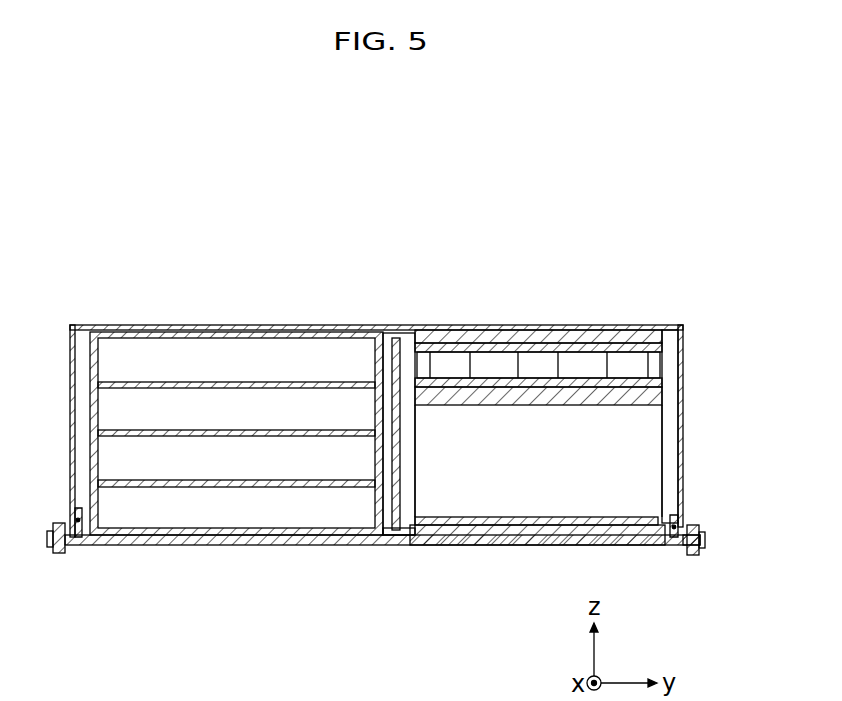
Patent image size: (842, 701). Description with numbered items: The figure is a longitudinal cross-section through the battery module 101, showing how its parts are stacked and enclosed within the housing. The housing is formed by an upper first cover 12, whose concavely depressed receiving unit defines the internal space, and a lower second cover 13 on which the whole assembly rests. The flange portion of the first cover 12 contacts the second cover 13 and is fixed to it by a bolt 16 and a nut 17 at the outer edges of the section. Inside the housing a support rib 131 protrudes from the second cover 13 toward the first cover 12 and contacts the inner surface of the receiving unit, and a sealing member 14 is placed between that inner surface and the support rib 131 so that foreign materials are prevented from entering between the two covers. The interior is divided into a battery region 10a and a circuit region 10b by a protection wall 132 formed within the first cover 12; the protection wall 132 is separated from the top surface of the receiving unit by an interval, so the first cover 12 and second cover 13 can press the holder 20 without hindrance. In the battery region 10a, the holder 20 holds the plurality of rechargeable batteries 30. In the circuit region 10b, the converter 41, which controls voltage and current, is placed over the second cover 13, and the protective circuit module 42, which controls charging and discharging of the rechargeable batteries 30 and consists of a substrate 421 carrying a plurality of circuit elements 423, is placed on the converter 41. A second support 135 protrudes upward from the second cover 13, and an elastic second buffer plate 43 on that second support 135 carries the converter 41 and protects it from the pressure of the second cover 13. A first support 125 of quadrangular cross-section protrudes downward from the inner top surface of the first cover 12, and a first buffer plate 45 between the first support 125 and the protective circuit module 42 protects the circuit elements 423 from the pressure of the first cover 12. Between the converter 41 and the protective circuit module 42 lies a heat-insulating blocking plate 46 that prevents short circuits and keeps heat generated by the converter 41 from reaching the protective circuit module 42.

The battery module 101 is at (96, 235).
The battery region 10a is at (88, 325).
The circuit region 10b is at (670, 356).
The first cover 12 is at (683, 392).
The second cover 13 is at (272, 547).
The sealing member 14 is at (78, 542).
The bolt 16 is at (693, 527).
The nut 17 is at (697, 550).
The holder 20 is at (198, 322).
The rechargeable batteries 30 is at (253, 352).
The converter 41 is at (655, 422).
The protective circuit module 42 is at (544, 309).
The second buffer plate 43 is at (482, 540).
The first buffer plate 45 is at (540, 352).
The blocking plate 46 is at (495, 385).
The first support 125 is at (397, 342).
The support rib 131 is at (72, 517).
The protection wall 132 is at (398, 530).
The second support 135 is at (663, 525).
The substrate 421 is at (640, 380).
The circuit elements 423 is at (621, 360).